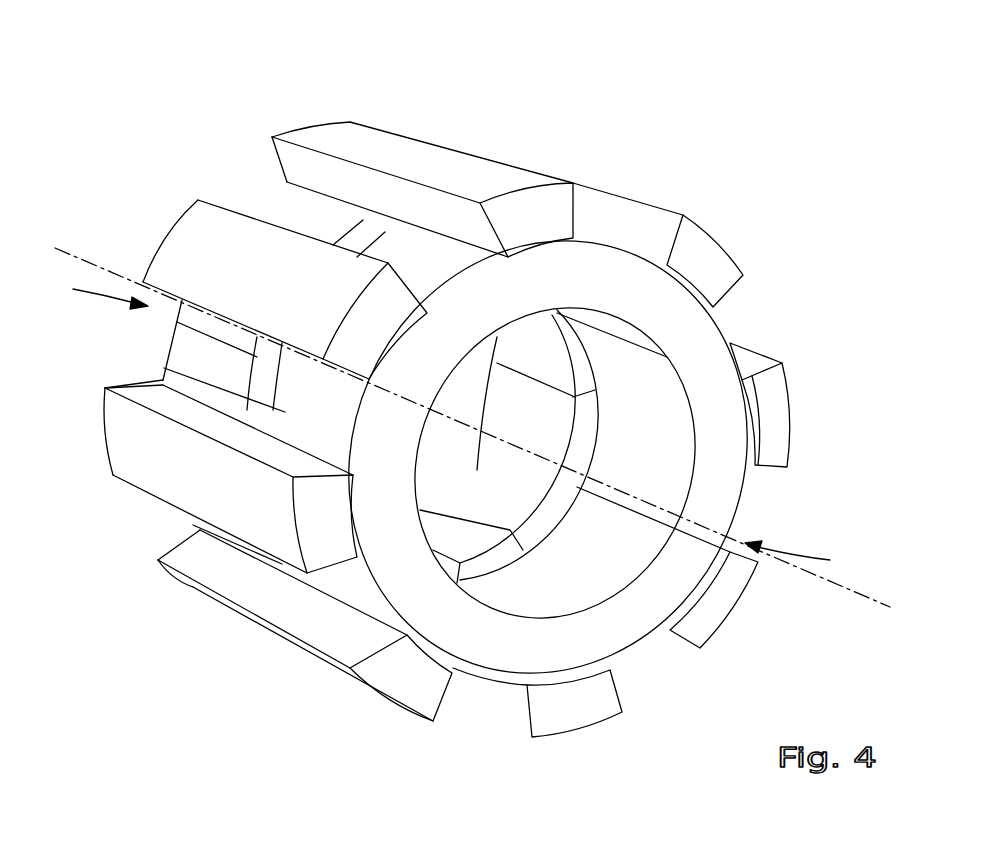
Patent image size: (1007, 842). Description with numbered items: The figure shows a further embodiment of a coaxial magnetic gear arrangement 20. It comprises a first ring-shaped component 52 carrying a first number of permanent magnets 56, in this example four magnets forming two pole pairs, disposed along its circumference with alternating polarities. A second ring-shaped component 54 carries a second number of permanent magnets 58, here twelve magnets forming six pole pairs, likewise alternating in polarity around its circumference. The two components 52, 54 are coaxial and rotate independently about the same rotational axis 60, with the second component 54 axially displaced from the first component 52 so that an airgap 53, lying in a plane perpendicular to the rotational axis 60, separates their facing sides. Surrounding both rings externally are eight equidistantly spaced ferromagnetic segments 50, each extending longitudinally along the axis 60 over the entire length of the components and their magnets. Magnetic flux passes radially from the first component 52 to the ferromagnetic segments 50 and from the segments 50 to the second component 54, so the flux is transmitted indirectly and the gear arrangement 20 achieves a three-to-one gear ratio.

The coaxial magnetic gear arrangement 20 is at (622, 108).
The ferromagnetic segments 50 is at (195, 235).
The first ring-shaped component 52 is at (808, 557).
The airgap 53 is at (182, 383).
The second ring-shaped component 54 is at (89, 290).
The permanent magnets 56 is at (474, 300).
The permanent magnets 58 is at (282, 207).
The rotational axis 60 is at (883, 605).